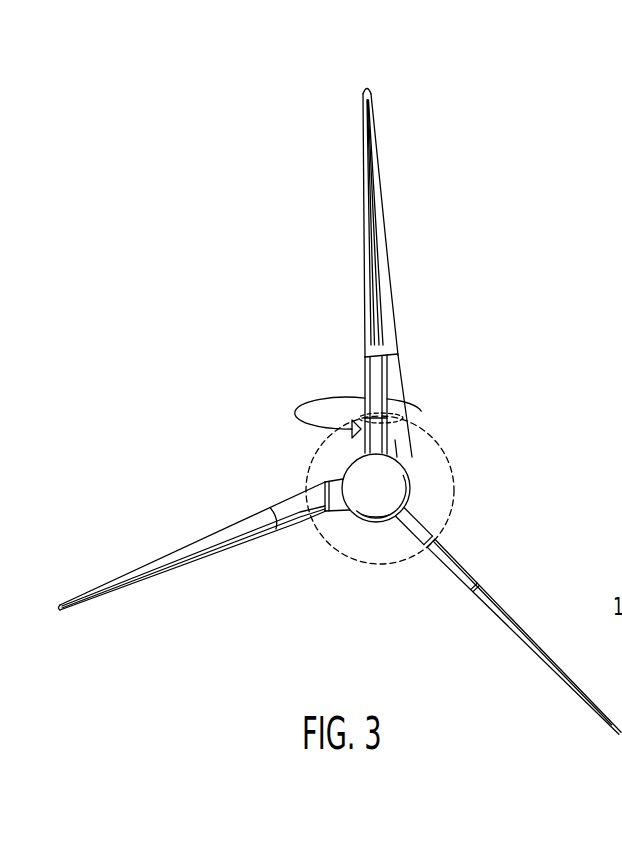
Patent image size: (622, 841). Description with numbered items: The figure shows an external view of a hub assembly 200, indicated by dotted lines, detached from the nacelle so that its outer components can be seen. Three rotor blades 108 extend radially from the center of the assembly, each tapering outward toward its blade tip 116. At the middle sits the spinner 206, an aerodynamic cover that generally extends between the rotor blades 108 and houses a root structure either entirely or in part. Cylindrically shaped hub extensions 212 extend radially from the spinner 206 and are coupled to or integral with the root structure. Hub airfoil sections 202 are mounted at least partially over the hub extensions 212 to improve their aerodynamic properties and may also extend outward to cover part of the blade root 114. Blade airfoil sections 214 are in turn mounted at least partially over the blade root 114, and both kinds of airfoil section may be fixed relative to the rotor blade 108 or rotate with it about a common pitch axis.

The rotor blade 108 is at (393, 306).
The blade root 114 is at (382, 397).
The blade tip 116 is at (370, 93).
The hub assembly 200 is at (308, 470).
The hub airfoil section 202 is at (408, 444).
The spinner 206 is at (356, 542).
The hub extension 212 is at (402, 420).
The blade airfoil section 214 is at (404, 390).